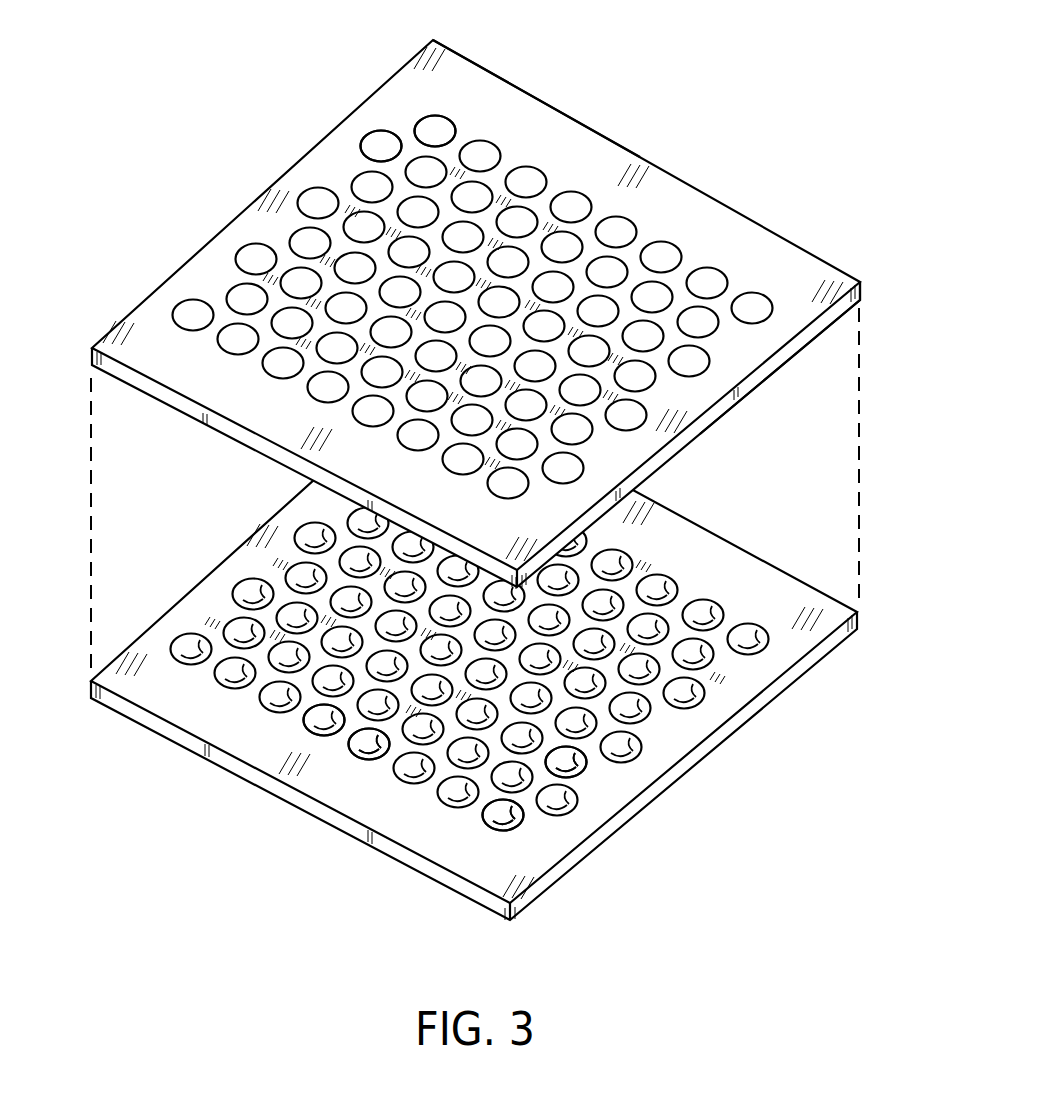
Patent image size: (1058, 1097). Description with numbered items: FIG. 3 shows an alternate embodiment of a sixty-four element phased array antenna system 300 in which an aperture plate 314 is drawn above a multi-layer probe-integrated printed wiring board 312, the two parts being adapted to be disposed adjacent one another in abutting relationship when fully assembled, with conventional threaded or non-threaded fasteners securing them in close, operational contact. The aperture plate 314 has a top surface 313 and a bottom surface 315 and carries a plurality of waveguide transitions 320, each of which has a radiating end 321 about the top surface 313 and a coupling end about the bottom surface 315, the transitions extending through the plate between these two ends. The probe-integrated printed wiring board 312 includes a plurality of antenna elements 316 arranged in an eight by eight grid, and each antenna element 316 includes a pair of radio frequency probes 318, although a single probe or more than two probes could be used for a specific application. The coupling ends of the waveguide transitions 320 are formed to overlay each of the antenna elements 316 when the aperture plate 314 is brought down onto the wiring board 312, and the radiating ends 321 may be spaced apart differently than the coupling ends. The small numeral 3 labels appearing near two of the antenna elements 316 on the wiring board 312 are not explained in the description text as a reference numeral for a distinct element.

The phased array antenna system 300 is at (243, 200).
The multi-layer probe-integrated printed wiring board 312 is at (178, 728).
The top surface 313 is at (466, 72).
The aperture plate 314 is at (712, 237).
The bottom surface 315 is at (822, 331).
The antenna element 316 is at (317, 718).
The radio frequency (RF) probe 318 is at (364, 752).
The waveguide transition 320 is at (373, 145).
The radiating end 321 is at (425, 117).
The flow direction indicator 3 is at (565, 763).